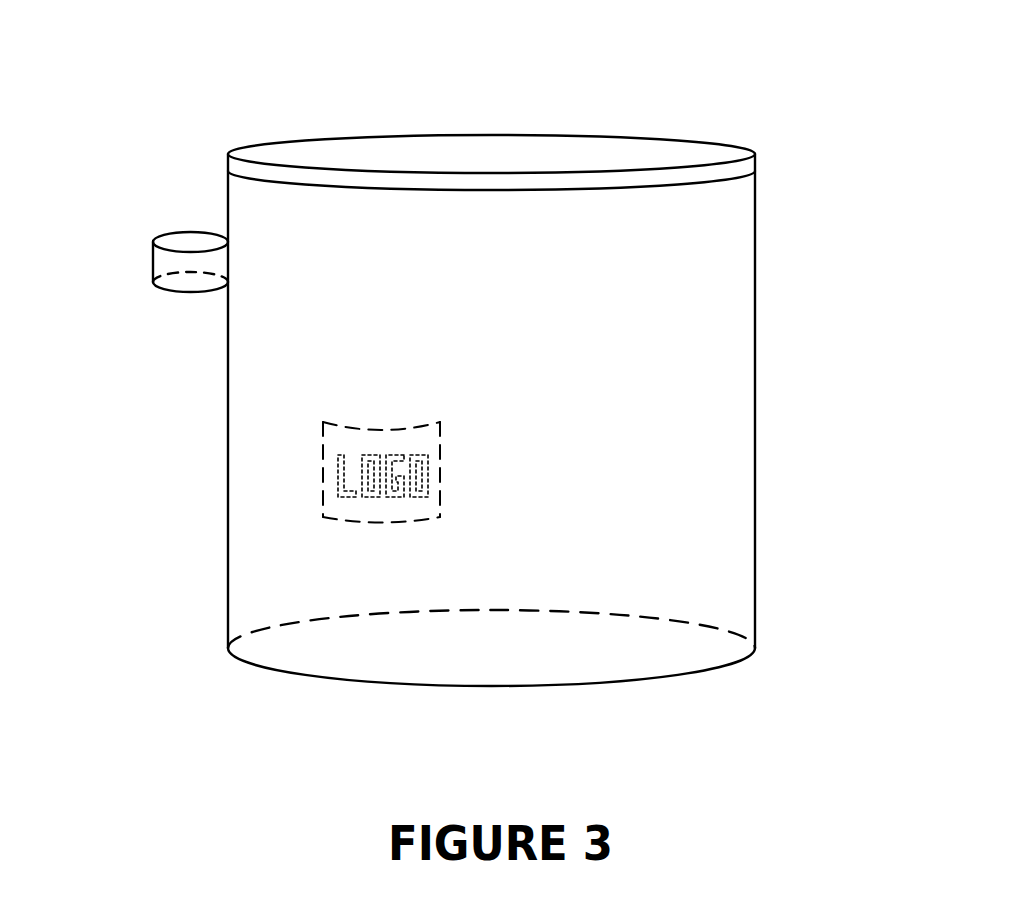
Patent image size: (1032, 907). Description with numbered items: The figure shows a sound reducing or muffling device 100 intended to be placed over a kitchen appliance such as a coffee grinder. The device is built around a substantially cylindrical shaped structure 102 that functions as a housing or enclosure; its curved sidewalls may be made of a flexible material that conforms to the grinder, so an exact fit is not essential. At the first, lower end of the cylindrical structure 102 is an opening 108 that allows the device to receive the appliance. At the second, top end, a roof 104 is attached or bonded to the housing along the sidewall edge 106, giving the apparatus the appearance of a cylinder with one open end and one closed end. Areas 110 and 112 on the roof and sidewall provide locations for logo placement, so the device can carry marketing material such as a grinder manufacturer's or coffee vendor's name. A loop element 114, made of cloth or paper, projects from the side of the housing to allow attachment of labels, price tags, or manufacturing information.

The muffling device 100 is at (727, 104).
The cylindrical shaped structure 102 is at (756, 342).
The roof 104 is at (322, 158).
The sidewall edge 106 is at (756, 155).
The opening 108 is at (650, 682).
The area 110 is at (488, 155).
The area 112 is at (323, 493).
The loop element 114 is at (152, 273).